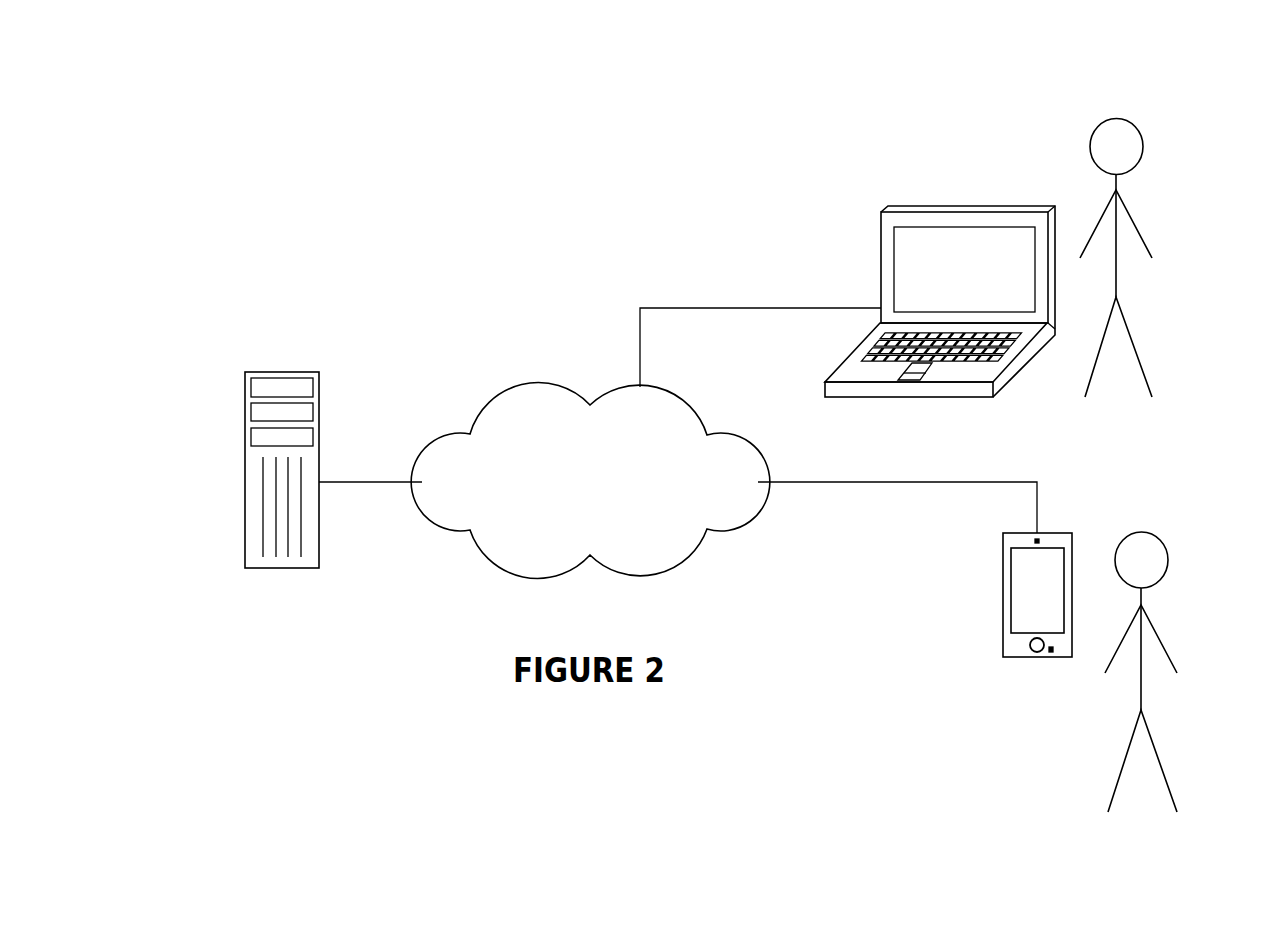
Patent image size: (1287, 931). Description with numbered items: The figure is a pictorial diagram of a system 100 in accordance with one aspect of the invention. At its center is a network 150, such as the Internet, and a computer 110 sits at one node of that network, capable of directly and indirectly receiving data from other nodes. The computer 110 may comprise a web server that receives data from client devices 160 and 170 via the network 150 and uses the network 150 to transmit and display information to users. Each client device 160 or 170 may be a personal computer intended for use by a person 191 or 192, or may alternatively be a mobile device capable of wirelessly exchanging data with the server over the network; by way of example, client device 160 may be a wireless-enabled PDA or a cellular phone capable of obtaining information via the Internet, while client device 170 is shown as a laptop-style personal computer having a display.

The system 100 is at (288, 76).
The computer 110 is at (245, 387).
The network 150 is at (538, 387).
The client device 160 is at (1003, 556).
The client device 170 is at (881, 244).
The person 191 is at (1142, 205).
The person 192 is at (1165, 605).